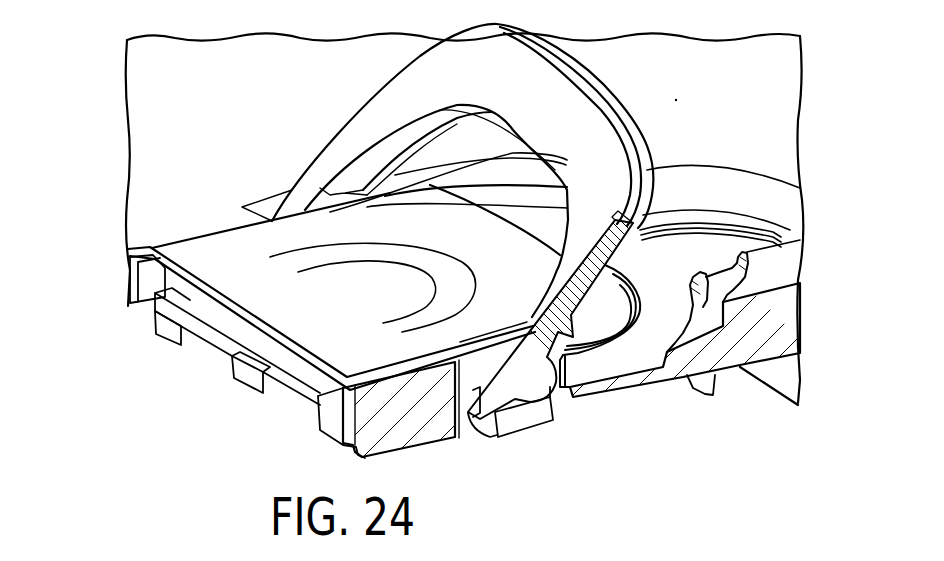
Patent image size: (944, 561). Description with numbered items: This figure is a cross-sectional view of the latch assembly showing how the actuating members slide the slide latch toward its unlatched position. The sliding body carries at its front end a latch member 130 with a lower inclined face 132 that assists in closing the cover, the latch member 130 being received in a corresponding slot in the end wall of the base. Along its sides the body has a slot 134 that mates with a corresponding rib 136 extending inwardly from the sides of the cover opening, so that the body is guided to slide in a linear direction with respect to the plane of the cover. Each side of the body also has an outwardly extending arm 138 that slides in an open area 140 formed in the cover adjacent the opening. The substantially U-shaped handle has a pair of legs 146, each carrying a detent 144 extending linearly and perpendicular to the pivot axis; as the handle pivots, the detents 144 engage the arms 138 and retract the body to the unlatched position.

The latch member 130 is at (290, 397).
The lower inclined face 132 is at (307, 408).
The slot 134 is at (147, 297).
The rib 136 is at (313, 417).
The arm 138 is at (524, 428).
The open area 140 is at (575, 397).
The detent 144 is at (472, 424).
The leg 146 is at (567, 267).